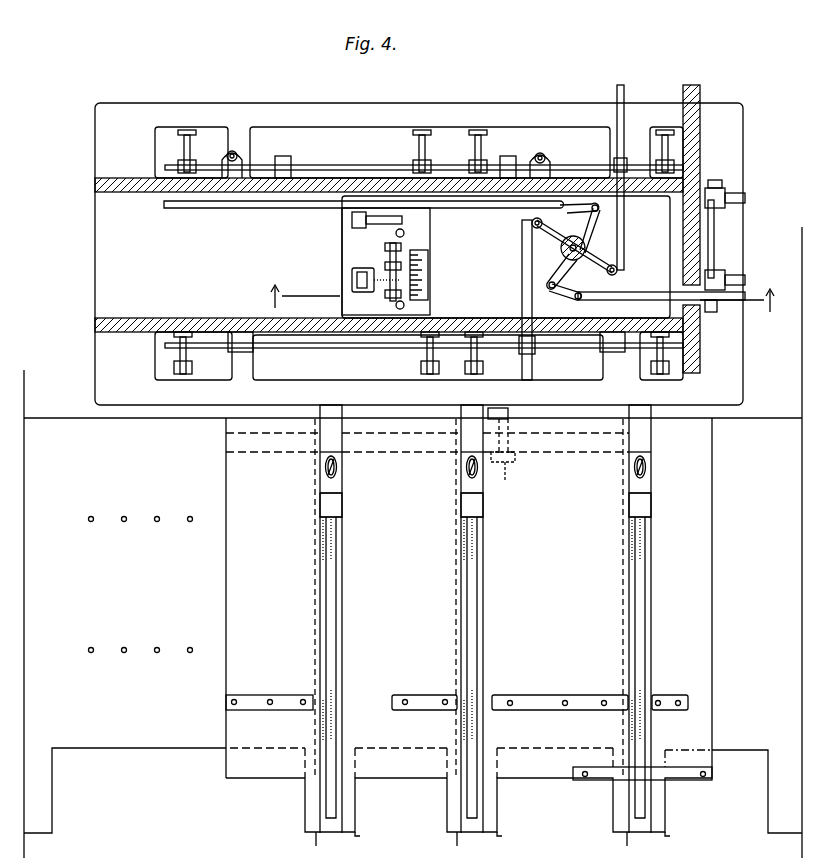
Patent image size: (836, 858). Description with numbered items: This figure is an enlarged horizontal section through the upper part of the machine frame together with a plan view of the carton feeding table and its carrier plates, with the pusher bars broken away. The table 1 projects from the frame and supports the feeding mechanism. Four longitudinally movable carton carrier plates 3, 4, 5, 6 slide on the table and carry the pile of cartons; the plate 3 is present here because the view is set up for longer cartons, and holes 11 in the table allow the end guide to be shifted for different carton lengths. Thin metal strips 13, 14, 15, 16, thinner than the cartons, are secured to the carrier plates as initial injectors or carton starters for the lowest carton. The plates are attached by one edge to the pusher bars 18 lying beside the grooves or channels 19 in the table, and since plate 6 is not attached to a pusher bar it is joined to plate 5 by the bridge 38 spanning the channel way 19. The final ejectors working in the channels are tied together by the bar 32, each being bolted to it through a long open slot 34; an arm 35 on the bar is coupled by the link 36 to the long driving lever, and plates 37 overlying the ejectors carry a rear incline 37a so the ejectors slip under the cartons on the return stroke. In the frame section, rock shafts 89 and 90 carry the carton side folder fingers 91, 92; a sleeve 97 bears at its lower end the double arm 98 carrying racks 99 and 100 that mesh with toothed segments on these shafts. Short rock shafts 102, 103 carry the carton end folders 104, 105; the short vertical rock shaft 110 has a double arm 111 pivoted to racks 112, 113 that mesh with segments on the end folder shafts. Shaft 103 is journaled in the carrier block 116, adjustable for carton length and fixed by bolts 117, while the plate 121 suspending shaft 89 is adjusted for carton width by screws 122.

The table 1 is at (165, 750).
The carton carrier plate 3 is at (249, 598).
The carton carrier plate 4 is at (336, 699).
The carton carrier plate 5 is at (521, 436).
The carton carrier plate 6 is at (579, 625).
The holes 11 is at (146, 535).
The thin metal strip 13 is at (268, 695).
The thin metal strip 14 is at (427, 695).
The thin metal strip 15 is at (575, 695).
The thin metal strip 16 is at (670, 695).
The pusher bar 18 is at (314, 840).
The groove or channel 19 is at (348, 832).
The bar 32 is at (427, 598).
The long open slot 34 is at (337, 730).
The arm 35 is at (506, 477).
The link 36 is at (508, 410).
The plate 37 is at (320, 432).
The incline 37a is at (342, 508).
The bridge 38 is at (684, 780).
The rock shaft 89 is at (424, 158).
The rock shaft 90 is at (424, 357).
The carton side folder finger 91 is at (184, 141).
The carton side folder finger 92 is at (194, 360).
The sleeve 97 is at (560, 246).
The double arm 98 is at (532, 227).
The rack 99 is at (624, 236).
The rack 100 is at (522, 277).
The short rock shaft 102 is at (716, 238).
The short rock shaft 103 is at (388, 262).
The carton end folder 104 is at (745, 198).
The carton end folder 105 is at (358, 220).
The short vertical rock shaft 110 is at (586, 248).
The double arm 111 is at (576, 251).
The rack 112 is at (250, 209).
The rack 113 is at (661, 288).
The carrier block 116 is at (352, 278).
The bolt 117 is at (405, 234).
The plate 121 is at (142, 193).
The screw 122 is at (237, 153).